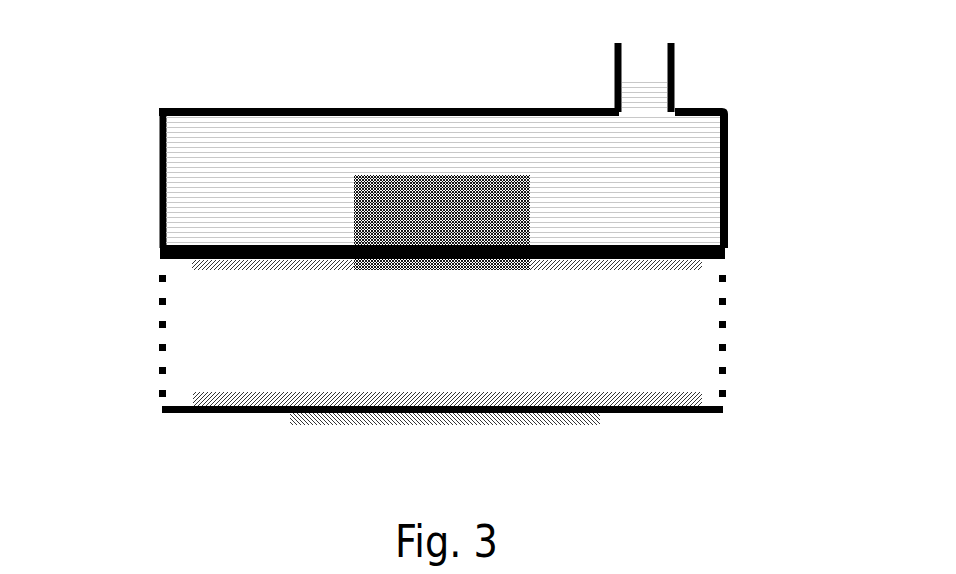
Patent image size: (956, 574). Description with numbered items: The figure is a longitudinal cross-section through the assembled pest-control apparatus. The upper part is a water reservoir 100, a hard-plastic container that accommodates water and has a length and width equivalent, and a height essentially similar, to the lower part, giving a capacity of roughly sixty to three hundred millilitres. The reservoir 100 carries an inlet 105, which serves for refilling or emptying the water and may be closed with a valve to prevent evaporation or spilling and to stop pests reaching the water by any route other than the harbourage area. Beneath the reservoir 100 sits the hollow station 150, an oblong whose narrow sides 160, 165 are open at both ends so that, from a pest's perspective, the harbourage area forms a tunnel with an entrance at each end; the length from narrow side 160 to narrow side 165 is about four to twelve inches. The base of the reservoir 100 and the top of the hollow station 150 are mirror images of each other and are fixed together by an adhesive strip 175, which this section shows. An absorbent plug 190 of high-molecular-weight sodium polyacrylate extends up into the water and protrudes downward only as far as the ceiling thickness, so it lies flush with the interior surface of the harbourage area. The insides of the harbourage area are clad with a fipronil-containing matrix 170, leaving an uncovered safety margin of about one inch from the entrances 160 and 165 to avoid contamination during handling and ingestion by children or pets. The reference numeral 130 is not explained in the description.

The water reservoir 100 is at (224, 72).
The inlet 105 is at (660, 37).
The chamber fluid 130 is at (508, 148).
The hollow station 150 is at (226, 434).
The narrow side 160 is at (145, 325).
The narrow side 165 is at (740, 326).
The fipronil-containing matrix 170 is at (655, 400).
The adhesive strip 175 is at (437, 422).
The absorbent plug 190 is at (495, 257).